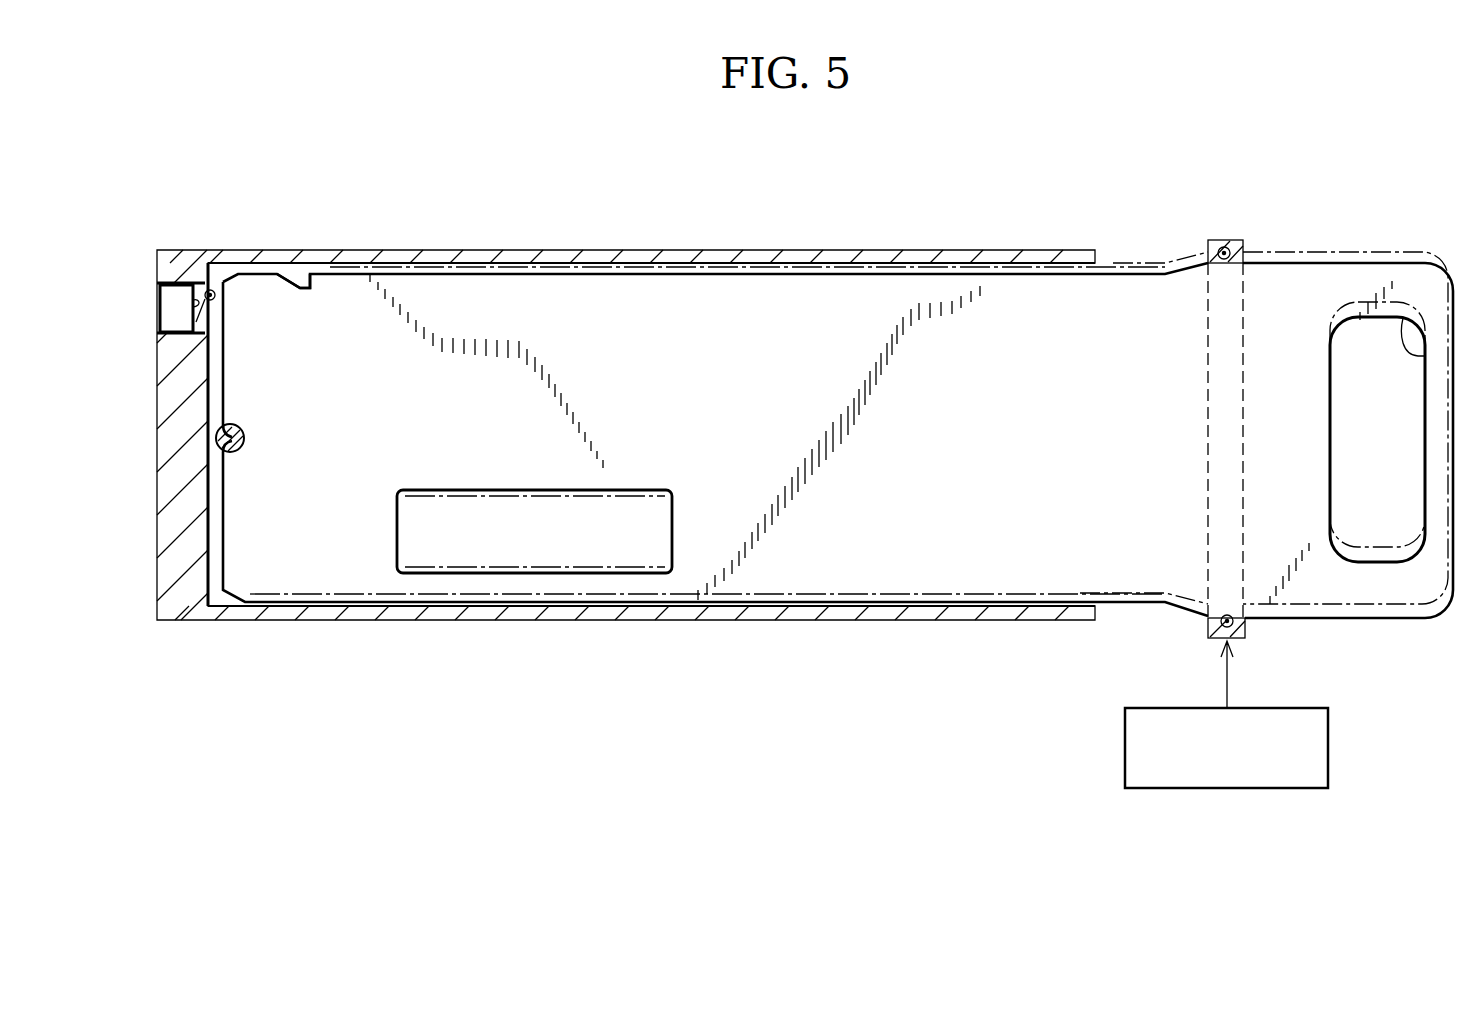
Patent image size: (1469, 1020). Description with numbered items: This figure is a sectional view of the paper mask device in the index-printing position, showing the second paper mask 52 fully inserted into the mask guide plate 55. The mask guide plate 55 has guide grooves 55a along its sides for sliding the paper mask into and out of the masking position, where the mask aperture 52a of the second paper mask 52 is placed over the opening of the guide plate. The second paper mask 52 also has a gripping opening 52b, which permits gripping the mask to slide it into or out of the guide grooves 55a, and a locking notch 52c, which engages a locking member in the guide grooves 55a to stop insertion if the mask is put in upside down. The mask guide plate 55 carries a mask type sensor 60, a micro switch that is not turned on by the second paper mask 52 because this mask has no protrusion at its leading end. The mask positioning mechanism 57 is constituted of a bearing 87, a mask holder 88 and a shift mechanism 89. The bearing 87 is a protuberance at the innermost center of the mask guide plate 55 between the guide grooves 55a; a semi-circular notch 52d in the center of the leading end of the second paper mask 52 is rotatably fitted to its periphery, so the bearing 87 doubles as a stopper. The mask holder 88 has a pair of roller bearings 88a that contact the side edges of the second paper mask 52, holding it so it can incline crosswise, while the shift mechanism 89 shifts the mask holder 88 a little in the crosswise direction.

The second paper mask 52 is at (1328, 262).
The mask aperture 52a is at (490, 492).
The gripping opening 52b is at (1410, 318).
The locking notch 52c is at (302, 272).
The semi-circular notch 52d is at (234, 451).
The mask guide plate 55 is at (708, 256).
The guide grooves 55a is at (828, 273).
The mask positioning mechanism 57 is at (1097, 679).
The mask type sensor 60 is at (176, 310).
The bearing 87 is at (244, 434).
The mask holder 88 is at (1224, 243).
The roller bearings 88a is at (1230, 265).
The shift mechanism 89 is at (1228, 790).